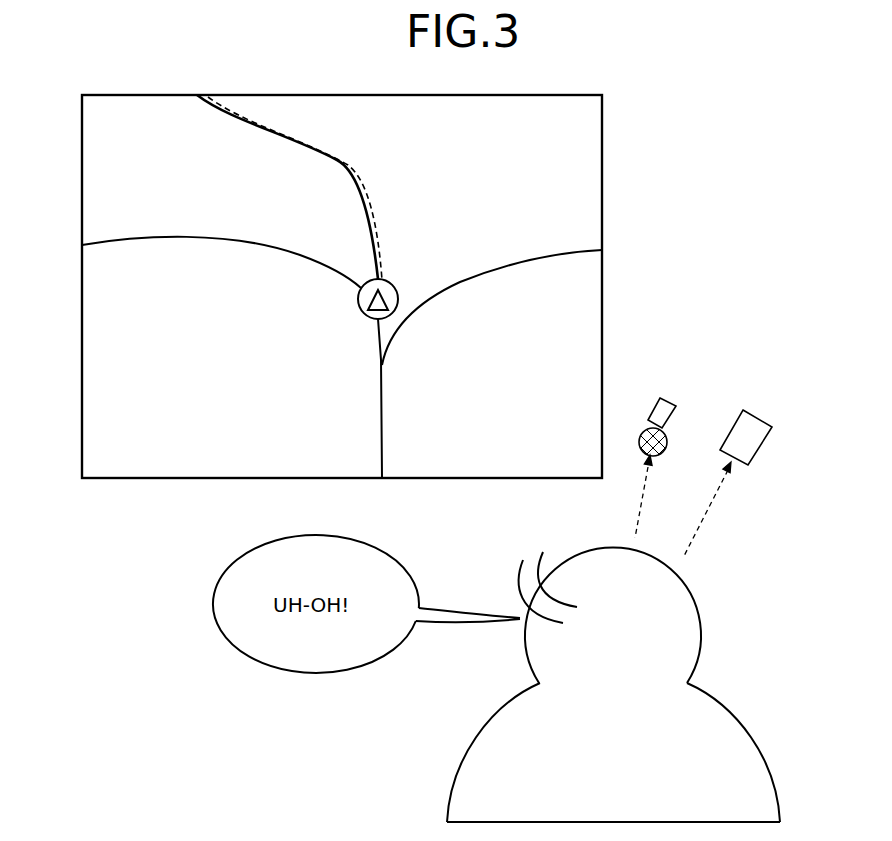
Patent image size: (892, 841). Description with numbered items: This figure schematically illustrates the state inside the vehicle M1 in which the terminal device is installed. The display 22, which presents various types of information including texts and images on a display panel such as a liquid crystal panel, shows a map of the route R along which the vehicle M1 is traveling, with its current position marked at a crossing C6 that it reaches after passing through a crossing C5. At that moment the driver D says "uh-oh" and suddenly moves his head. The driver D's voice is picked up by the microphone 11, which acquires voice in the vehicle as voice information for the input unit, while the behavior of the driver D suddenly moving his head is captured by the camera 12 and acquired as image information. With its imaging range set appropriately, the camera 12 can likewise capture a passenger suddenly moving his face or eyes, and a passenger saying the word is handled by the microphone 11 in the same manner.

The display 22 is at (602, 130).
The route R is at (298, 133).
The vehicle M1 is at (394, 285).
The crossing C6 is at (355, 287).
The crossing C5 is at (372, 365).
The microphone 11 is at (668, 400).
The camera 12 is at (762, 410).
The driver D is at (713, 698).